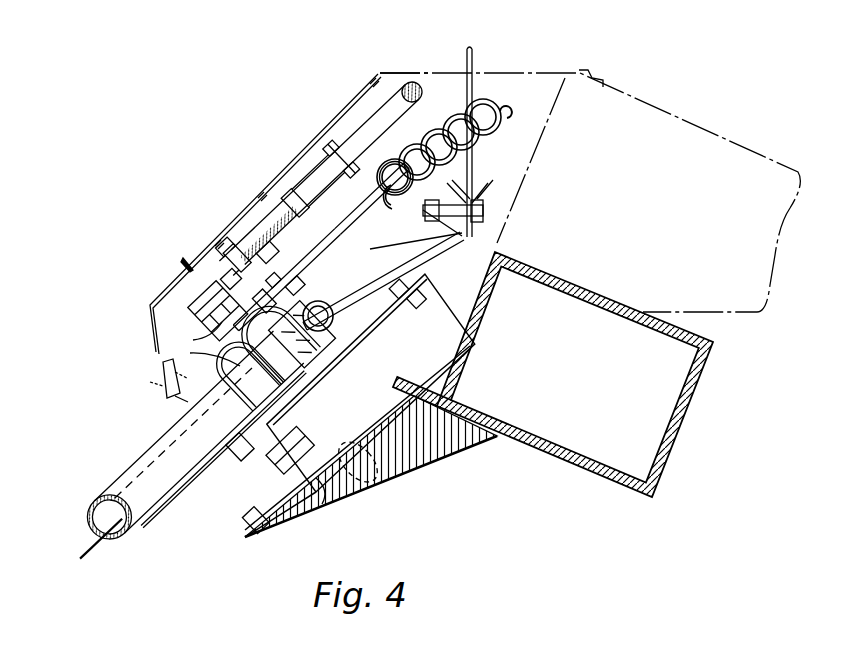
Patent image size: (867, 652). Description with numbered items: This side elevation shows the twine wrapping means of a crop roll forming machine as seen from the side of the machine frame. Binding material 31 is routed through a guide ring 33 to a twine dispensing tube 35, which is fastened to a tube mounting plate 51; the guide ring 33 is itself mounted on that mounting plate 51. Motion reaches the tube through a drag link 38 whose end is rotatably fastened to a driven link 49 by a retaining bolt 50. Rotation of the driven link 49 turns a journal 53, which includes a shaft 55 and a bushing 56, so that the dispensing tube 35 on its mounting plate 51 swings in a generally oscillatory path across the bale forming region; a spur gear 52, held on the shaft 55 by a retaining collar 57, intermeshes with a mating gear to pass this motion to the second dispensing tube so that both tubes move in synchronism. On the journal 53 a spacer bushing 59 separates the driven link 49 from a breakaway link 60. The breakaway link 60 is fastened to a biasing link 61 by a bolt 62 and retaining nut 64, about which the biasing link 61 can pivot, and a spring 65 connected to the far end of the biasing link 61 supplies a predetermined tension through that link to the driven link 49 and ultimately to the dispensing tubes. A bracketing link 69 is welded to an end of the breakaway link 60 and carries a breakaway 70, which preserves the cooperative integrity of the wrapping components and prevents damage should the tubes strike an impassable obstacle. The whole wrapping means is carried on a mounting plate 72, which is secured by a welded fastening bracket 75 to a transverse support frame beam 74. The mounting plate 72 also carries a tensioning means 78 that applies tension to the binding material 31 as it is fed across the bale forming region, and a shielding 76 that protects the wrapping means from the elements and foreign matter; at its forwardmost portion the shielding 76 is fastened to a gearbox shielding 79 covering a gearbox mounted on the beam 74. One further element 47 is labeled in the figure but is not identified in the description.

The binding material 31 is at (470, 50).
The guide ring 33 is at (335, 317).
The twine dispensing tube 35 is at (124, 470).
The drag link 38 is at (396, 100).
The rod 47 is at (232, 240).
The driven link 49 is at (228, 278).
The retaining bolt 50 is at (268, 242).
The tube mounting plate 51 is at (238, 444).
The spur gears 52 is at (356, 386).
The journal 53 is at (185, 262).
The shaft 55 is at (197, 292).
The bushing 56 is at (243, 446).
The retaining collar 57 is at (358, 496).
The spacer bushing 59 is at (193, 340).
The breakaway link 60 is at (190, 353).
The biasing link 61 is at (357, 220).
The bolt 62 is at (292, 195).
The retaining nut 64 is at (293, 289).
The spring 65 is at (498, 128).
The bracketing link 69 is at (386, 160).
The breakaway 70 is at (328, 140).
The mounting plate 72 is at (273, 459).
The transverse support frame beam 74 is at (600, 478).
The fastening bracket 75 is at (320, 508).
The shielding 76 is at (426, 73).
The tensioning means 78 is at (486, 182).
The gearbox shielding 79 is at (704, 130).